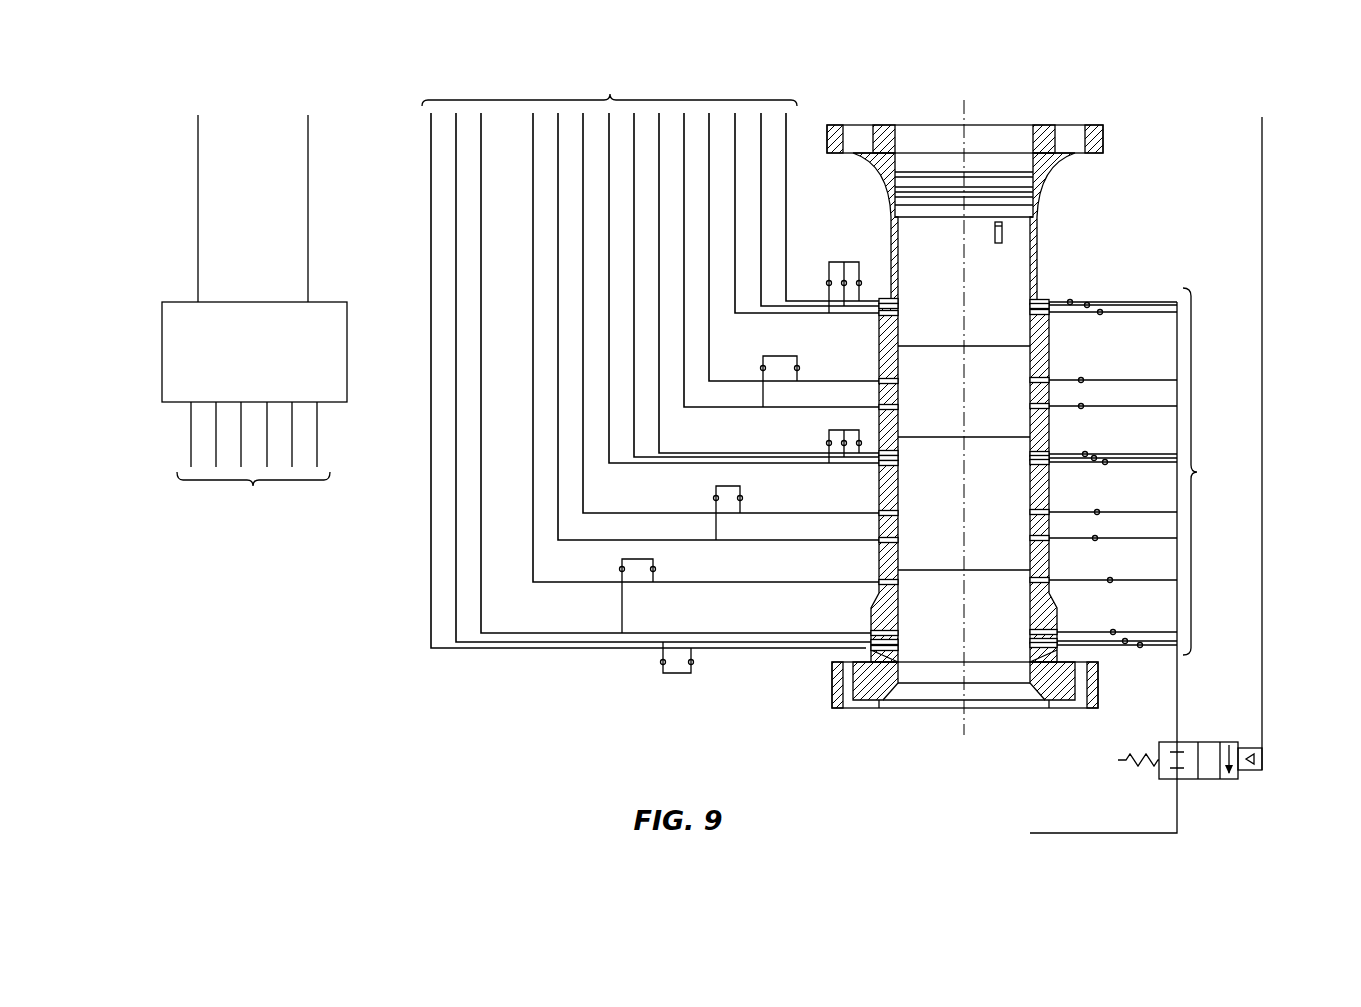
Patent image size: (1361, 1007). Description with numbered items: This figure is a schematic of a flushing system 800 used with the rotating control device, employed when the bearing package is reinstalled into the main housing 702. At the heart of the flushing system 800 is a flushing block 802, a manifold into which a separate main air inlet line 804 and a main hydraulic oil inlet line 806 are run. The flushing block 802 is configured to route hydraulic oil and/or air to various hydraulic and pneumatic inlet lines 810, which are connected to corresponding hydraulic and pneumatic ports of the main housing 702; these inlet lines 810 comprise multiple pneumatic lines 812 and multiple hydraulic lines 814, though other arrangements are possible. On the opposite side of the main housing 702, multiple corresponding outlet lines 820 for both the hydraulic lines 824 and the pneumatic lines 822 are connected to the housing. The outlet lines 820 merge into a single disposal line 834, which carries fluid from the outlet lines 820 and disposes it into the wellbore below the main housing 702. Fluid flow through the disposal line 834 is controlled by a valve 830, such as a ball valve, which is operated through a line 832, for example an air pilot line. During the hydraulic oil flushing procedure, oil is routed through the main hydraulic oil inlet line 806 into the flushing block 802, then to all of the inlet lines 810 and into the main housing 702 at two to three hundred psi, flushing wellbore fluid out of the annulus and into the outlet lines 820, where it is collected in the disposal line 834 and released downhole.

The flushing system 800 is at (237, 57).
The flushing block 802 is at (327, 300).
The main air inlet line 804 is at (308, 216).
The main hydraulic oil inlet line 806 is at (198, 216).
The hydraulic and pneumatic inlet lines 810 is at (528, 355).
The main housing 702 is at (1092, 123).
The pneumatic lines 812 is at (822, 347).
The hydraulic lines 814 is at (711, 516).
The pneumatic lines 822 is at (1113, 368).
The hydraulic lines 824 is at (1113, 512).
The outlet lines 820 is at (1217, 471).
The valve 830 is at (1228, 782).
The line 832 is at (1262, 698).
The disposal line 834 is at (1175, 713).